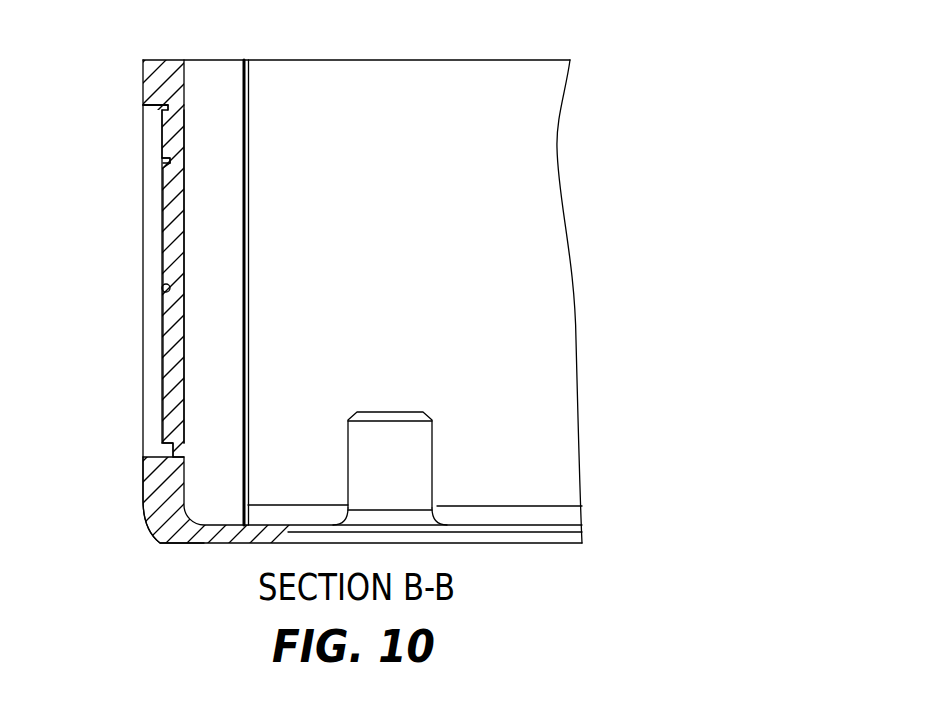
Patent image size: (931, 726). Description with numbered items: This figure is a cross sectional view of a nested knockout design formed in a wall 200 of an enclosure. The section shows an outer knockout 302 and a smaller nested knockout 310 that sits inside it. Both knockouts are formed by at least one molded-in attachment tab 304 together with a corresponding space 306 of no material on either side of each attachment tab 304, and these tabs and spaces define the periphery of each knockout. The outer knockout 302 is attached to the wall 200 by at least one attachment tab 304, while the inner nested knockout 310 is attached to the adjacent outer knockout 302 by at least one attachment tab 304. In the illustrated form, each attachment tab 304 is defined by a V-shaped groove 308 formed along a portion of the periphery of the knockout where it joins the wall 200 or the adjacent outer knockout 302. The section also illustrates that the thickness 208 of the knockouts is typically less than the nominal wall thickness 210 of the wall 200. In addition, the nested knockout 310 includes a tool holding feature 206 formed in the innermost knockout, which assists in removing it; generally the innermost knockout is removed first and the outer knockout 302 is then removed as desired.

The wall 200 is at (160, 488).
The tool holding feature 206 is at (163, 287).
The thickness 208 is at (223, 211).
The nominal wall thickness 210 is at (103, 22).
The outer knockout 302 is at (178, 134).
The attachment tab 304 is at (190, 106).
The space 306 is at (170, 450).
The V-shaped groove 308 is at (157, 109).
The nested knockout 310 is at (176, 364).